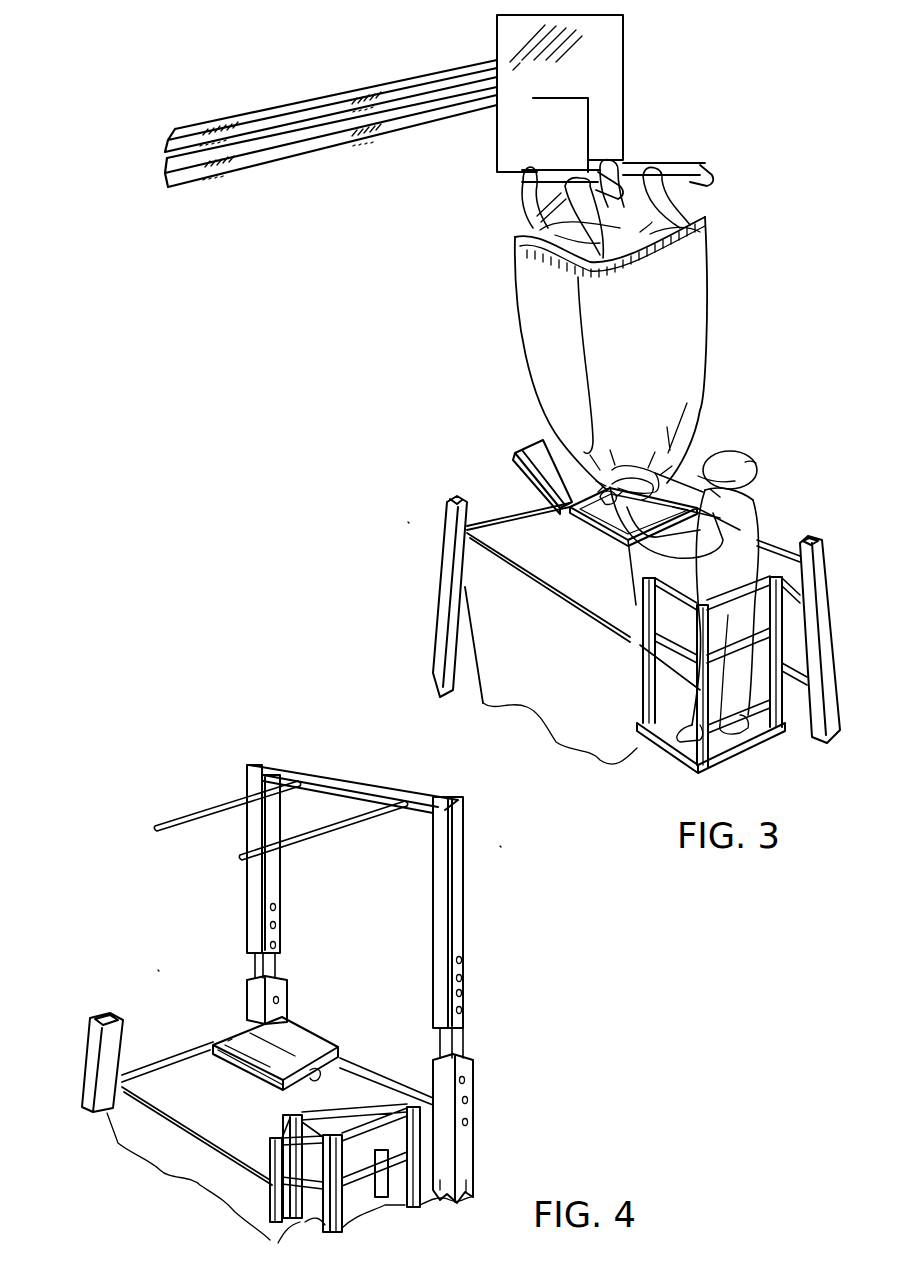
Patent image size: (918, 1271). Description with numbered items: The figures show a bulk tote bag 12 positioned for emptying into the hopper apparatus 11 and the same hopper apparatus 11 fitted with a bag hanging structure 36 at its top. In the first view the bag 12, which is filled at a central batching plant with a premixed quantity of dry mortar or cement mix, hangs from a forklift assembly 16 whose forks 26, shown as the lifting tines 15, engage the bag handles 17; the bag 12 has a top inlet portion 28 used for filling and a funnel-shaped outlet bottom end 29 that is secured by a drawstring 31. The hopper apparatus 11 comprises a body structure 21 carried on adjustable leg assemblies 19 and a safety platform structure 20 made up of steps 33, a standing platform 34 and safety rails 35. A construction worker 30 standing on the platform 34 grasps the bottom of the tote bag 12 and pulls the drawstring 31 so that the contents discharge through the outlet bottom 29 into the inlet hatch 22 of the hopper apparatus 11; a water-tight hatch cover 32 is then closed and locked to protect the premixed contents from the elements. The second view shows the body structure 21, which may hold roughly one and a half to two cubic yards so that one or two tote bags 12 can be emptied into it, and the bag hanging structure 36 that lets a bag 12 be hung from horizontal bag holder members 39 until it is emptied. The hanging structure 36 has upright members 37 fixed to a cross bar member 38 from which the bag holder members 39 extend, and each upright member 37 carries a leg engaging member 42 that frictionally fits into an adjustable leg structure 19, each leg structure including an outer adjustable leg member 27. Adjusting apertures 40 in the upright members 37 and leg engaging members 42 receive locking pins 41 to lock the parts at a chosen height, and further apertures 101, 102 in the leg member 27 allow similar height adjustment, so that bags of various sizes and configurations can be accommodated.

In FIG. 3, the hopper apparatus 11 is at (412, 526).
In FIG. 4, the hopper apparatus 11 is at (160, 974).
In FIG. 3, the bulk tote bag 12 is at (530, 368).
In FIG. 3, the forklift forks 15 is at (295, 86).
In FIG. 3, the fork assembly 16 is at (615, 45).
In FIG. 3, the handles 17 is at (585, 190).
In FIG. 3, the adjustable leg assemblies 19 is at (431, 666).
In FIG. 4, the adjustable leg assemblies 19 is at (292, 1006).
In FIG. 3, the safety platform structure 20 is at (750, 750).
In FIG. 4, the safety platform structure 20 is at (439, 1204).
In FIG. 3, the body structure 21 is at (526, 712).
In FIG. 4, the body structure 21 is at (190, 1163).
In FIG. 3, the inlet hatch 22 is at (618, 538).
In FIG. 3, the forks 26 is at (515, 182).
In FIG. 4, the outer adjustable leg member 27 is at (478, 1166).
In FIG. 3, the inlet portion 28 is at (640, 232).
In FIG. 3, the outlet bottom end 29 is at (633, 480).
In FIG. 3, the construction worker 30 is at (748, 545).
In FIG. 3, the drawstring 31 is at (592, 522).
In FIG. 3, the hatch cover 32 is at (512, 478).
In FIG. 4, the hatch cover 32 is at (322, 1045).
In FIG. 3, the steps 33 is at (806, 598).
In FIG. 3, the standing platform 34 is at (730, 752).
In FIG. 3, the safety rails 35 is at (684, 602).
In FIG. 4, the bag hanging structure 36 is at (495, 849).
In FIG. 4, the upright members 37 is at (280, 870).
In FIG. 4, the cross bar member 38 is at (342, 777).
In FIG. 4, the bag holder members 39 is at (243, 838).
In FIG. 4, the adjusting apertures 40 is at (283, 930).
In FIG. 4, the locking pins 41 is at (283, 907).
In FIG. 4, the leg engaging members 42 is at (280, 968).
In FIG. 4, the pin hole 101 is at (468, 1080).
In FIG. 4, the pin hole 102 is at (470, 1102).